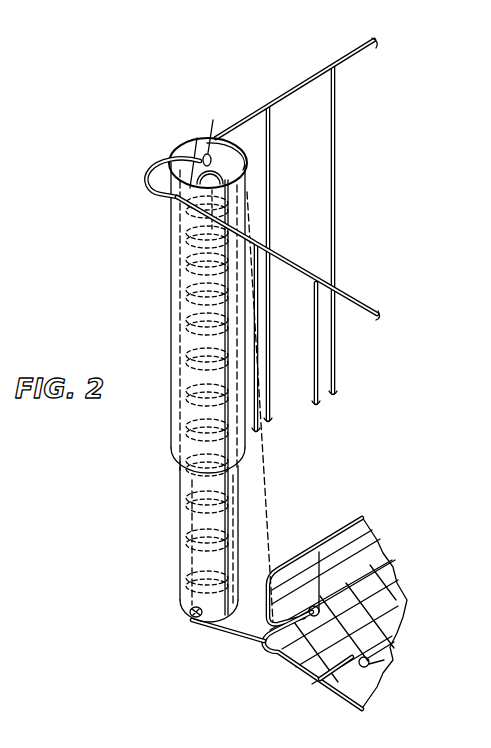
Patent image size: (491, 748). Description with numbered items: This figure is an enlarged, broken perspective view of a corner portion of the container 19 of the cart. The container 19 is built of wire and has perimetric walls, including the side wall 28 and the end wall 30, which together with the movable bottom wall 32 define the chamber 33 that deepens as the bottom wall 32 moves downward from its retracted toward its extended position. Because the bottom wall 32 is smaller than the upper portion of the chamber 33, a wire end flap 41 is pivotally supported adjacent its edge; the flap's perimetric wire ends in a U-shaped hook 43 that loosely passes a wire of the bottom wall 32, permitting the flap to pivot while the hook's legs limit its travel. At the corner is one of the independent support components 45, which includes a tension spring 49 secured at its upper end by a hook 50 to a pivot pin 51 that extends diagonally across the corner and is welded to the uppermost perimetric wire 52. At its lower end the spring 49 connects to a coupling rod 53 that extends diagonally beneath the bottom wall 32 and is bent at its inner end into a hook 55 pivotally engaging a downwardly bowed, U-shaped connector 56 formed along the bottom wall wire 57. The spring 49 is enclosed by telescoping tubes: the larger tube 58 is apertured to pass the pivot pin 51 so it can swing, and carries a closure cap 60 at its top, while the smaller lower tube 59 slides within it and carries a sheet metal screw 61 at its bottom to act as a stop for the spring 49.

The container 19 is at (323, 60).
The side wall 28 is at (357, 298).
The end wall 30 is at (292, 85).
The bottom wall 32 is at (277, 658).
The chamber 33 is at (378, 155).
The end flap 41 is at (357, 517).
The hook 43 is at (325, 585).
The support component 45 is at (171, 316).
The tension spring 49 is at (186, 291).
The hook 50 is at (228, 158).
The pivot pin 51 is at (208, 150).
The uppermost perimetric wire 52 is at (163, 190).
The coupling rod 53 is at (237, 638).
The hook 55 is at (377, 660).
The connector 56 is at (393, 644).
The bottom wall wire 57 is at (337, 668).
The larger tube 58 is at (186, 420).
The lower tube 59 is at (182, 483).
The closure cap 60 is at (180, 152).
The sheet metal screw 61 is at (188, 606).